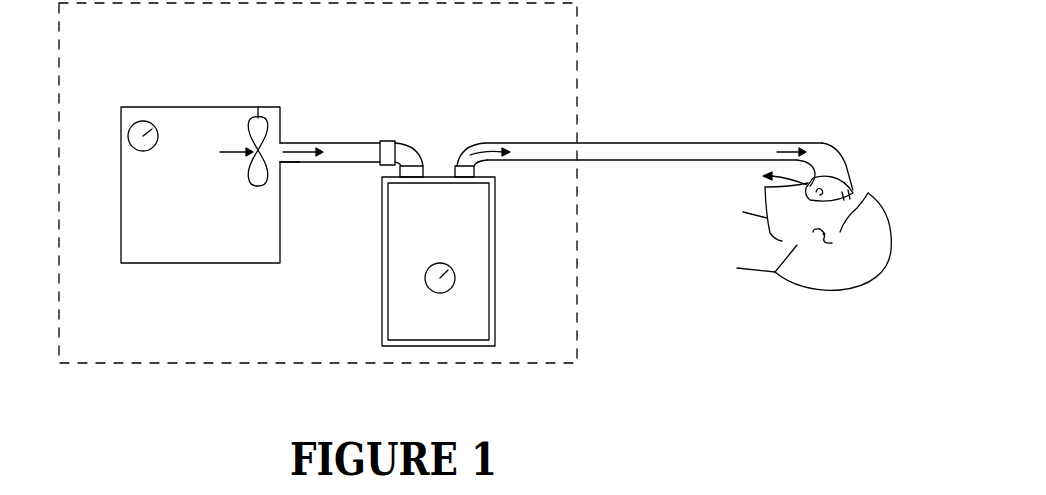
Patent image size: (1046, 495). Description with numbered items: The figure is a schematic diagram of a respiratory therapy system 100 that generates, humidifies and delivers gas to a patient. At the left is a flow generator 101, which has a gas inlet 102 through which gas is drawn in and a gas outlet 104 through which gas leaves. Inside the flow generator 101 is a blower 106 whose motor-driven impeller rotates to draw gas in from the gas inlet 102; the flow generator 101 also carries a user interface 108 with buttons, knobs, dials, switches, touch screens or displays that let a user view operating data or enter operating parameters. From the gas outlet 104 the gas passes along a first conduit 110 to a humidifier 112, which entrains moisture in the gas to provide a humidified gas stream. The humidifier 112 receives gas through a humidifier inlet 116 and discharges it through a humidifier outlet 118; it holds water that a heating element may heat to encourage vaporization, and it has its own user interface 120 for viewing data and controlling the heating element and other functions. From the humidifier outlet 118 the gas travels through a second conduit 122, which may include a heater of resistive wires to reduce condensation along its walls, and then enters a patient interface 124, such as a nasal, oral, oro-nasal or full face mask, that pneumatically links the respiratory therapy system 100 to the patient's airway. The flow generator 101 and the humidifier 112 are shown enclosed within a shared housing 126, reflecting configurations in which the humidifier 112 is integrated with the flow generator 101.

The respiratory therapy system 100 is at (736, 340).
The flow generator 101 is at (222, 107).
The gas inlet 102 is at (112, 212).
The gas outlet 104 is at (285, 166).
The blower 106 is at (258, 107).
The user interface 108 is at (148, 121).
The first conduit 110 is at (332, 143).
The humidifier 112 is at (495, 203).
The humidifier inlet 116 is at (423, 165).
The humidifier outlet 118 is at (458, 164).
The user interface 120 is at (455, 282).
The second conduit 122 is at (633, 143).
The patient interface 124 is at (845, 183).
The housing 126 is at (578, 262).